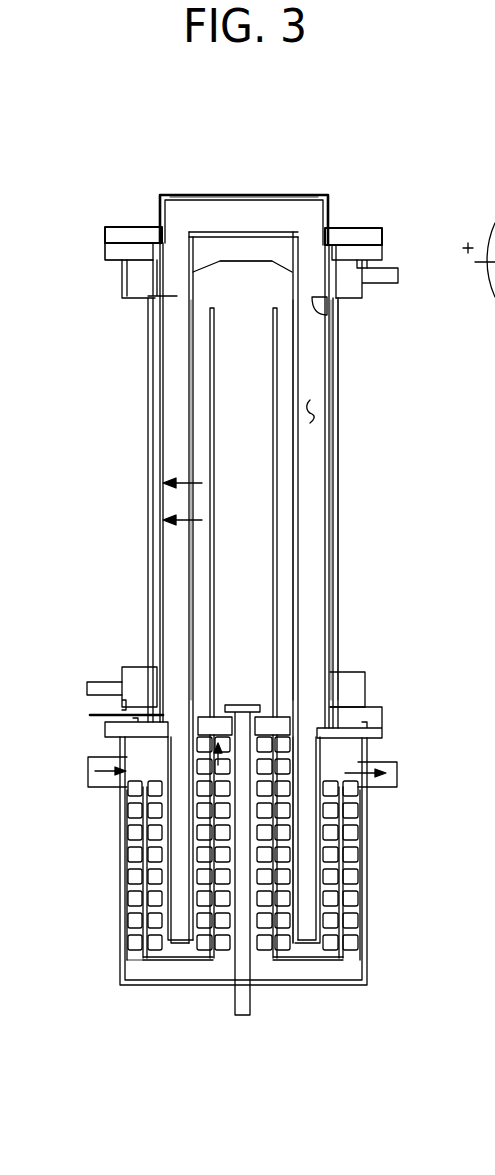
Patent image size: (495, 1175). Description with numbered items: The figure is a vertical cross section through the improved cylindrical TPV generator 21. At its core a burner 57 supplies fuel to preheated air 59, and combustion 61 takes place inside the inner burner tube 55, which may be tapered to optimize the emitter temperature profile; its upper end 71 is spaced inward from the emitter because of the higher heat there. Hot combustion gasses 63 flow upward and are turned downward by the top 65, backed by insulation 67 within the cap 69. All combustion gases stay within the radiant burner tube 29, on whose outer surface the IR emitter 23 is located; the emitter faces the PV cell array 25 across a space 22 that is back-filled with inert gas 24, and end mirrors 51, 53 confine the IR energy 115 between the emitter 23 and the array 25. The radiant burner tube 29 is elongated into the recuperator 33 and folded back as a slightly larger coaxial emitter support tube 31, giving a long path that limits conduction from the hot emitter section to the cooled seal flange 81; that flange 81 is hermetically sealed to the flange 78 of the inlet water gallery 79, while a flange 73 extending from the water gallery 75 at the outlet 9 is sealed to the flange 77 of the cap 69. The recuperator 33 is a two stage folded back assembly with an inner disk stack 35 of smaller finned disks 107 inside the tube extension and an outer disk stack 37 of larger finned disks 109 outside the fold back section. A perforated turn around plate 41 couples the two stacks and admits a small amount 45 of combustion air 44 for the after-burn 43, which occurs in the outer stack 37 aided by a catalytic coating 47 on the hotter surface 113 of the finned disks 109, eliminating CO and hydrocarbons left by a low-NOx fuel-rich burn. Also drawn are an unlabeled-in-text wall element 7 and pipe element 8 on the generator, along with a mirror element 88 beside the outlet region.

The cylindrical TPV generator 21 is at (348, 187).
The outer tube 7 is at (337, 508).
The inlet 8 is at (88, 680).
The outlet 9 is at (388, 270).
The space 22 is at (310, 372).
The IR emitter 23 is at (298, 470).
The inert gas 24 is at (313, 408).
The PV cell array 25 is at (330, 577).
The radiant burner tube 29 is at (298, 680).
The emitter support tube 31 is at (305, 838).
The recuperator 33 is at (392, 990).
The inner disk stack 35 is at (283, 880).
The outer disk stack 37 is at (150, 825).
The perforated turn around plate 41 is at (310, 963).
The after-burn 43 is at (155, 890).
The combustion air 44 is at (88, 770).
The air supply 45 is at (170, 953).
The catalytic coating 47 is at (332, 927).
The end mirror 51 is at (318, 668).
The end mirror 53 is at (318, 305).
The inner burner tube 55 is at (210, 445).
The burner 57 is at (240, 705).
The preheated air 59 is at (196, 745).
The combustion 61 is at (230, 505).
The hot combustion gasses 63 is at (218, 313).
The top 65 is at (216, 232).
The insulation 67 is at (265, 248).
The cap 69 is at (248, 195).
The upper end 71 is at (208, 327).
The flange 73 is at (113, 250).
The water gallery 75 is at (138, 272).
The flange 77 is at (131, 233).
The flange 78 is at (108, 723).
The inlet water gallery 79 is at (137, 690).
The flange 81 is at (375, 745).
The mirror 88 is at (478, 263).
The finned disks 107 is at (208, 950).
The finned disks 109 is at (152, 947).
The hotter surface 113 is at (335, 800).
The IR energy 115 is at (177, 525).